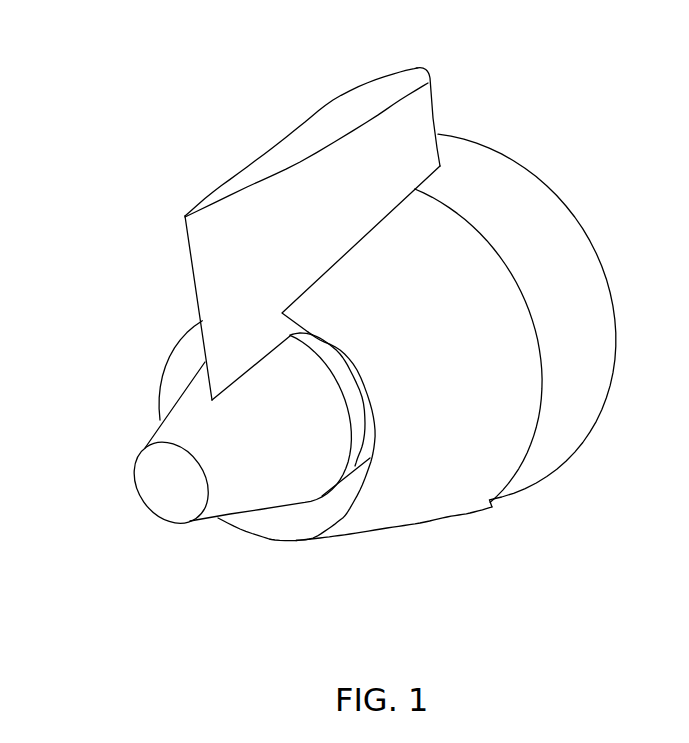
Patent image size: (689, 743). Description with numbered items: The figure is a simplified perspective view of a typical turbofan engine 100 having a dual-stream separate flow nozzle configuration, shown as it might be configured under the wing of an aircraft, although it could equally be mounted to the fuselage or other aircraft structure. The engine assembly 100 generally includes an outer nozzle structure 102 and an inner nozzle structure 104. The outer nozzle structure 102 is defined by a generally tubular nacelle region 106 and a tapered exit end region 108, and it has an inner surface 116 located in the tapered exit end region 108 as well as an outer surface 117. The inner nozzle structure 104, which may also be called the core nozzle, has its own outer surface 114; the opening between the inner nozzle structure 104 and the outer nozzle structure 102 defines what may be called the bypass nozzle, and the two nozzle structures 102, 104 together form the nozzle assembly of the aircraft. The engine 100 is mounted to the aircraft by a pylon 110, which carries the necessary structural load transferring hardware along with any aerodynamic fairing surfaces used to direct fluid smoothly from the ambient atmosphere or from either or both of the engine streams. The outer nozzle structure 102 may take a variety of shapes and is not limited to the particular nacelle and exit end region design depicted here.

The turbofan engine 100 is at (324, 328).
The outer nozzle structure 102 is at (270, 489).
The inner nozzle structure 104 is at (128, 507).
The nacelle region 106 is at (543, 462).
The tapered exit end region 108 is at (387, 525).
The pylon 110 is at (428, 122).
The outer surface 114 is at (185, 423).
The inner surface 116 is at (285, 538).
The outer surface 117 is at (455, 510).